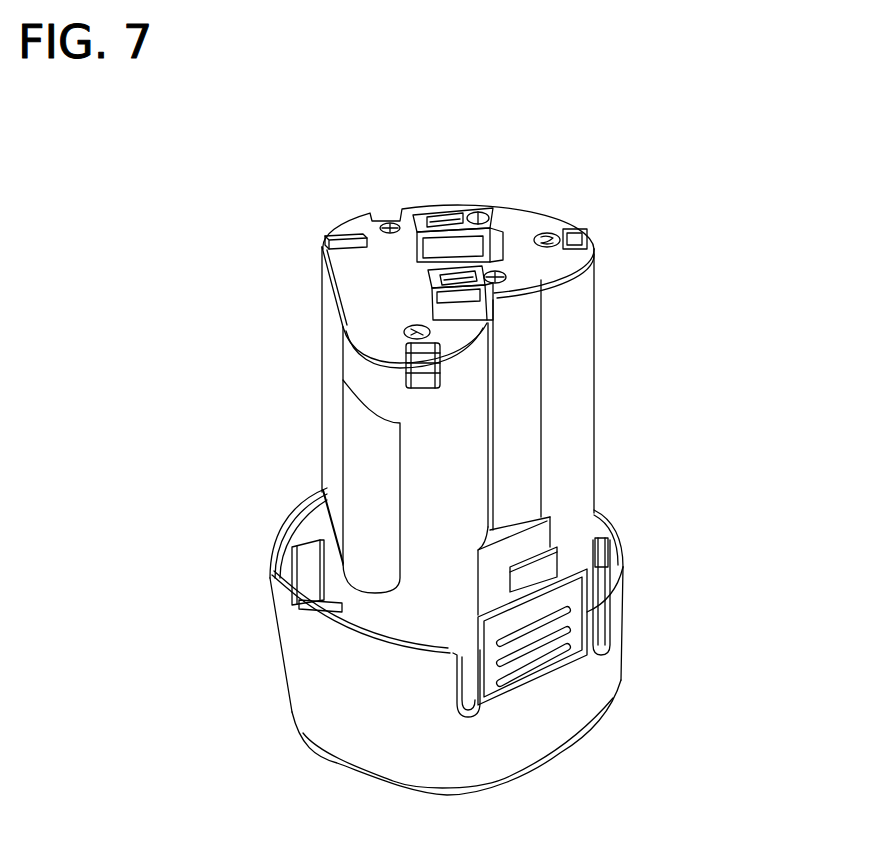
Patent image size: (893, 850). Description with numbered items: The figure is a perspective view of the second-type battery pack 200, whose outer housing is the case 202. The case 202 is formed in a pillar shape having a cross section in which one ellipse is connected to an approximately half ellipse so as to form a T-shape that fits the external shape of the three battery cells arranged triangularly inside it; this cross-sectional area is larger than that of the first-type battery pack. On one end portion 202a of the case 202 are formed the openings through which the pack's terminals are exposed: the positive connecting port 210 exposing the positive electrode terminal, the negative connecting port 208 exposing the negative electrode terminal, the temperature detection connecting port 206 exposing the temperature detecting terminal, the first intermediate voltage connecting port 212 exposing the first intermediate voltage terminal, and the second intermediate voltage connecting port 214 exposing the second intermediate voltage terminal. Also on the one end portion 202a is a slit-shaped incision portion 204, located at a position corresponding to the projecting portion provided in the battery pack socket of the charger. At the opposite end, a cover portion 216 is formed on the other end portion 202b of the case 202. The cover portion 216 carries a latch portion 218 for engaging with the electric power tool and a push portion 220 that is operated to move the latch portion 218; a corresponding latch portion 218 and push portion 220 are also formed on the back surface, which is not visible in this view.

The second-type battery pack 200 is at (748, 183).
The case 202 is at (294, 415).
The one end portion of the case 202a is at (343, 293).
The other end portion of the case 202b is at (298, 742).
The incision portion 204 is at (345, 237).
The temperature detection connecting port 206 is at (388, 221).
The negative connecting port 208 is at (443, 217).
The positive connecting port 210 is at (472, 278).
The first intermediate voltage connecting port 212 is at (585, 240).
The second intermediate voltage connecting port 214 is at (433, 387).
The cover portion 216 is at (618, 578).
The latch portion 218 is at (550, 558).
The push portion 220 is at (537, 663).